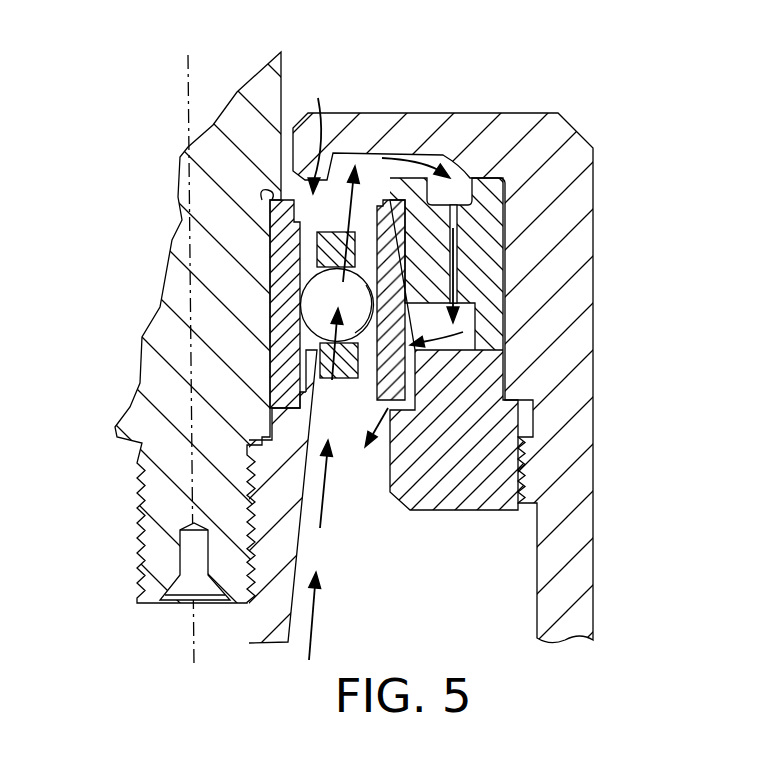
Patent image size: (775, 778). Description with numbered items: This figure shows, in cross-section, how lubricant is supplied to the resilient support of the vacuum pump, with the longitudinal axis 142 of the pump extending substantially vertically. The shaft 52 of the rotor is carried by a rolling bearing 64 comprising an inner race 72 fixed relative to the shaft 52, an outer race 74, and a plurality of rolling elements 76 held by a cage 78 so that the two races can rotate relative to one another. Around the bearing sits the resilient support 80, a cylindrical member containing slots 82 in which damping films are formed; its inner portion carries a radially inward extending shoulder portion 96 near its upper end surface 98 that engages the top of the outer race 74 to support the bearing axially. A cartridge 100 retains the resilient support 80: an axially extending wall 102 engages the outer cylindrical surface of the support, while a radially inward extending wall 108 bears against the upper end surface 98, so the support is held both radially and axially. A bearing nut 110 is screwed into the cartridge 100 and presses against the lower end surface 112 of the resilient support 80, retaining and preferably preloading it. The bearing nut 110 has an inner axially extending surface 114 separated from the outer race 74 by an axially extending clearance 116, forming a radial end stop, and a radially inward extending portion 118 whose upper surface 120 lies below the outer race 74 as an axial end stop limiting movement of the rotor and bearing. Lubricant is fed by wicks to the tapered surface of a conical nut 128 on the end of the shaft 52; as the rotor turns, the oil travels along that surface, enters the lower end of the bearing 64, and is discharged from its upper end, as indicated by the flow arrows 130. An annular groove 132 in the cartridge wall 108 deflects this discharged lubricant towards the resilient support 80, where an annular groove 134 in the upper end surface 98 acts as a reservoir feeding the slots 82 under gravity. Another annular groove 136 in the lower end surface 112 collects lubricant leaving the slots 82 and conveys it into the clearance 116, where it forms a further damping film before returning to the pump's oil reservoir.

The shaft 52 is at (258, 75).
The rolling bearing 64 is at (312, 135).
The inner race 72 is at (287, 356).
The outer race 74 is at (388, 210).
The rolling elements 76 is at (313, 307).
The cage 78 is at (325, 253).
The resilient support 80 is at (480, 242).
The slots 82 is at (493, 208).
The shoulder portion 96 is at (406, 190).
The upper end surface 98 is at (492, 178).
The cartridge 100 is at (488, 356).
The axially extending wall 102 is at (593, 282).
The radially inward extending wall 108 is at (352, 133).
The bearing nut 110 is at (502, 500).
The lower end surface 112 is at (507, 392).
The inner axially extending surface 114 is at (398, 398).
The clearance 116 is at (420, 390).
The radially inward extending portion 118 is at (392, 494).
The upper surface 120 is at (416, 400).
The conical nut 128 is at (272, 632).
The flow direction 130 is at (313, 600).
The annular groove 132 is at (428, 165).
The annular groove 134 is at (485, 152).
The annular groove 136 is at (478, 330).
The longitudinal axis 142 is at (187, 84).